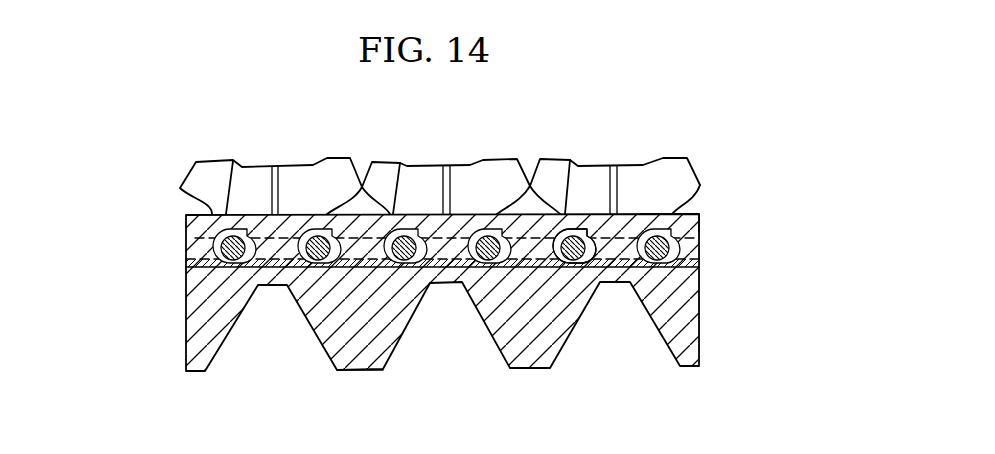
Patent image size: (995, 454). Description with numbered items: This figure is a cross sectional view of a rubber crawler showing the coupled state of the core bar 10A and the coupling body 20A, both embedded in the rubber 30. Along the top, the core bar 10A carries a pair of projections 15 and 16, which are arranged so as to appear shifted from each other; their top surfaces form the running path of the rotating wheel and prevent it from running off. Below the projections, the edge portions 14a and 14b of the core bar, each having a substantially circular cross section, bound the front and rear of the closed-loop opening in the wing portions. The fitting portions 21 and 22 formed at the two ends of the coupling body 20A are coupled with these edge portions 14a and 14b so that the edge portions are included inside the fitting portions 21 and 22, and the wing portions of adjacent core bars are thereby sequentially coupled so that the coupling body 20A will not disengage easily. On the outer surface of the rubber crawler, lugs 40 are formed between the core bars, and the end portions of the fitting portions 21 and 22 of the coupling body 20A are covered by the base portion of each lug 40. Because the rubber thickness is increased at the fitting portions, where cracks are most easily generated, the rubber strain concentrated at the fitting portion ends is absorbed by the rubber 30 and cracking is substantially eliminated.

The core bar 10A is at (489, 158).
The projection 15 is at (383, 173).
The projection 16 is at (490, 175).
The fitting portion 22 is at (222, 237).
The fitting portion 21 is at (688, 212).
The edge portion 14a is at (473, 268).
The edge portion 14b is at (573, 267).
The coupling body 20A is at (183, 268).
The rubber 30 is at (193, 300).
The lug 40 is at (380, 358).